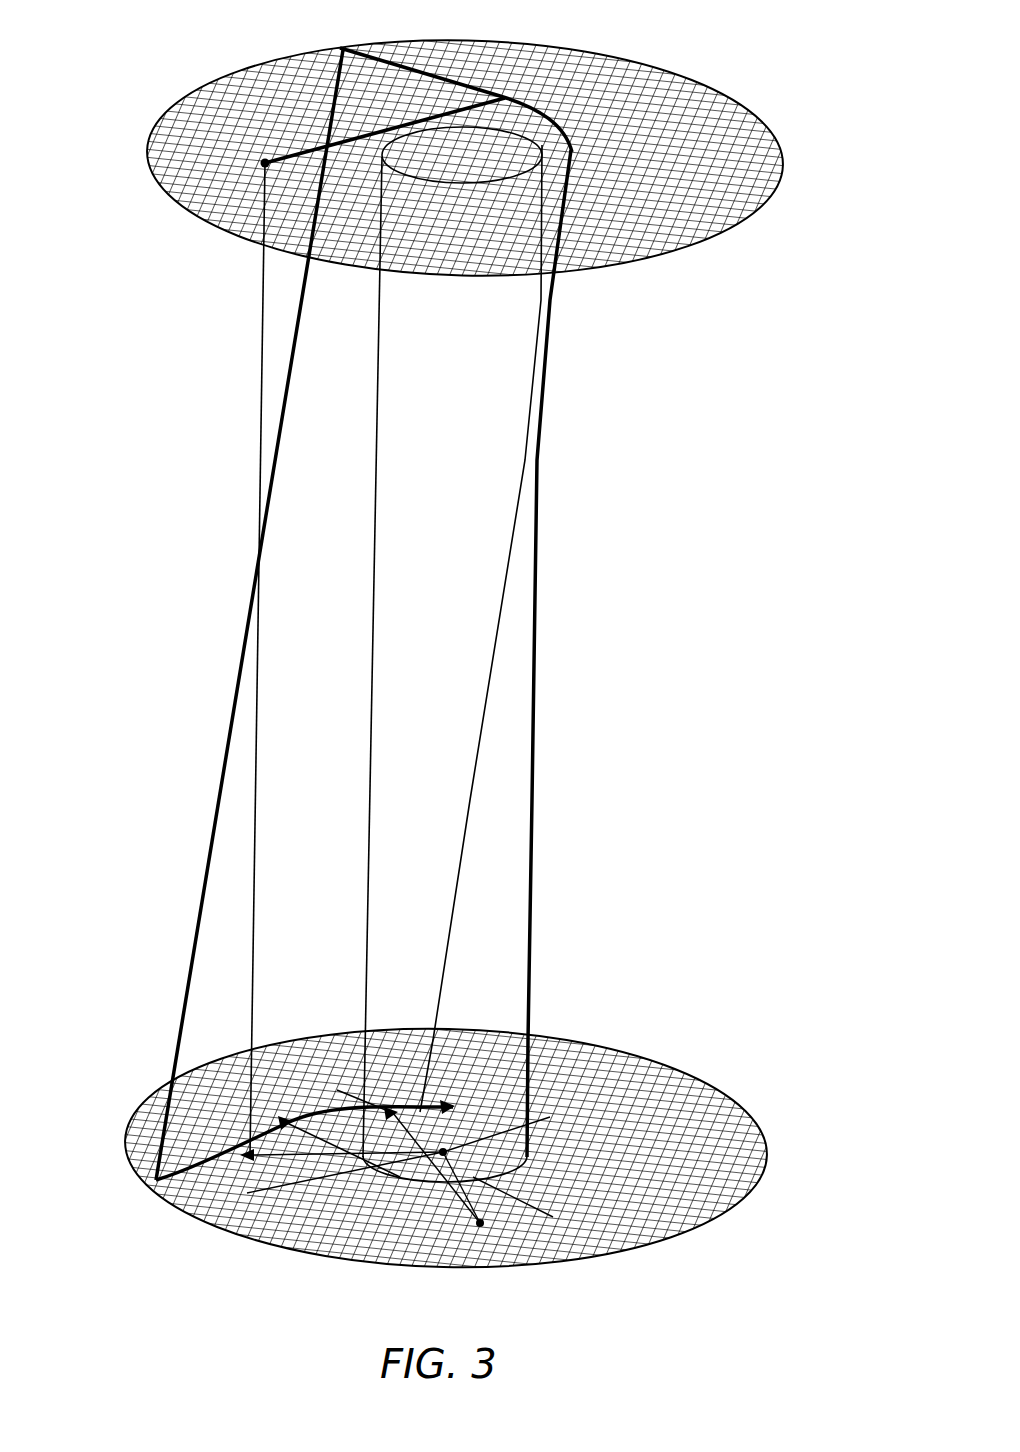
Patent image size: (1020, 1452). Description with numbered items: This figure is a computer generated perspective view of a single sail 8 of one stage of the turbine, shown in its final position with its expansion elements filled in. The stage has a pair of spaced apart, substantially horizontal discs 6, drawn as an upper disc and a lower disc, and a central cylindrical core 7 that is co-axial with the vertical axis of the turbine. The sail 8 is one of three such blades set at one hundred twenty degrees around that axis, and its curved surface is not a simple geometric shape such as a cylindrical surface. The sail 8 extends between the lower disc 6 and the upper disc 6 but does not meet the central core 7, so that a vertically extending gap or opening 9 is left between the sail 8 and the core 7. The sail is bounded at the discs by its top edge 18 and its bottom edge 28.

The disc 6 is at (729, 223).
The central cylindrical core 7 is at (532, 903).
The sail 8 is at (212, 903).
The gap 9 is at (455, 1107).
The top edge 18 is at (496, 103).
The bottom edge 28 is at (197, 1166).